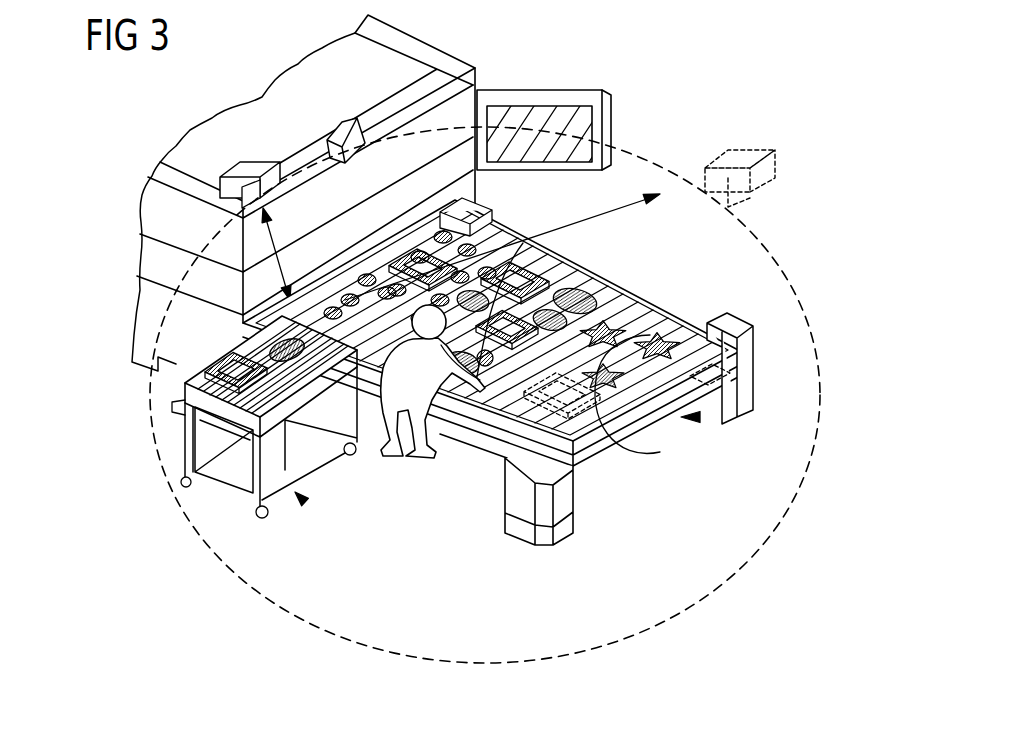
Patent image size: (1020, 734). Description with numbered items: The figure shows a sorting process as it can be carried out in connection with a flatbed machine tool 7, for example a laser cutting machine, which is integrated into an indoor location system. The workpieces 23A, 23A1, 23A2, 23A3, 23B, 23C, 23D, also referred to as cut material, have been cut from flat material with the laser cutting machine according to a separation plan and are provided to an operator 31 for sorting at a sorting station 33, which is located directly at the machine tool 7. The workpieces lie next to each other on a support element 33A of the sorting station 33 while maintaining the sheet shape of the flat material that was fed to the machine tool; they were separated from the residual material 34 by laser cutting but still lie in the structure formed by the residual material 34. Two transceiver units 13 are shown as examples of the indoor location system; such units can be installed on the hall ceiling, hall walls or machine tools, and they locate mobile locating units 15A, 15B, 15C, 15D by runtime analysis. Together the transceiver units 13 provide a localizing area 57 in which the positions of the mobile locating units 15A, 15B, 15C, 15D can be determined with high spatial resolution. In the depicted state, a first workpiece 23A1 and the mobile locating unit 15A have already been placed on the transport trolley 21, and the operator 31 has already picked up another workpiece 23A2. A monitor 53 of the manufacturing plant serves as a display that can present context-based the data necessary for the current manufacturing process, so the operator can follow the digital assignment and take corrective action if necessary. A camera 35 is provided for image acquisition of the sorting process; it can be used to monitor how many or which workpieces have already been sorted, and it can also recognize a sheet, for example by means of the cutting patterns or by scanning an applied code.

The machine tool 7 is at (476, 78).
The transceiver unit 13 is at (260, 162).
The mobile locating unit 15A is at (238, 366).
The mobile locating unit 15B is at (660, 452).
The mobile locating unit 15C is at (555, 340).
The mobile locating unit 15D is at (438, 252).
The transport trolley 21 is at (305, 502).
The workpiece 23A is at (697, 327).
The first workpiece 23A1 is at (290, 318).
The workpiece 23A2 is at (513, 362).
The workpiece 23A3 is at (706, 382).
The workpiece 23B is at (630, 312).
The workpiece 23C is at (548, 275).
The workpiece 23D is at (508, 257).
The operator 31 is at (390, 460).
The sorting station 33 is at (700, 417).
The support element 33A is at (598, 470).
The residual material 34 is at (745, 333).
The camera 35 is at (346, 126).
The monitor 53 is at (592, 90).
The localizing area 57 is at (777, 530).